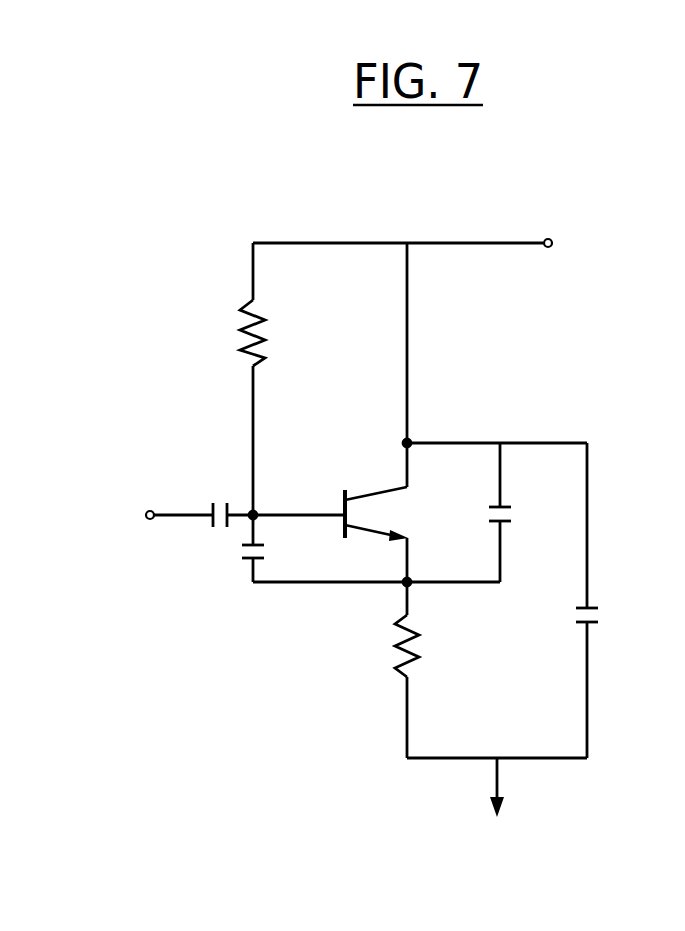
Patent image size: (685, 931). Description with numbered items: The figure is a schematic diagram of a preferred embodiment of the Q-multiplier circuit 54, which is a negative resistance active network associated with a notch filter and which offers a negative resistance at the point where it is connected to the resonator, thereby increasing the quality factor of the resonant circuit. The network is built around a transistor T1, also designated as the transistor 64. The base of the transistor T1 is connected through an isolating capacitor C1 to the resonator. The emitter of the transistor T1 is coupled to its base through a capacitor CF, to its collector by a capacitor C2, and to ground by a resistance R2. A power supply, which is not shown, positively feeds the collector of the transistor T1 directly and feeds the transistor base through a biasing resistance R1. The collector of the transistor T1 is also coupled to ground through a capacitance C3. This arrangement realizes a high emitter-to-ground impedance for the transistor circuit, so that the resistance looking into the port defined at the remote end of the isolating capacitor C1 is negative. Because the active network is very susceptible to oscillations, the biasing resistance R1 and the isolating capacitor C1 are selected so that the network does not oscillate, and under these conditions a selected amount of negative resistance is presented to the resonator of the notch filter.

The Q-multiplier circuit 54 is at (465, 165).
The transistor 64 is at (380, 490).
The biasing resistance R1 is at (275, 333).
The resistance R2 is at (424, 646).
The isolating capacitor C1 is at (218, 501).
The capacitor CF is at (269, 555).
The capacitor C2 is at (515, 520).
The capacitance C3 is at (611, 620).
The transistor T1 is at (388, 534).